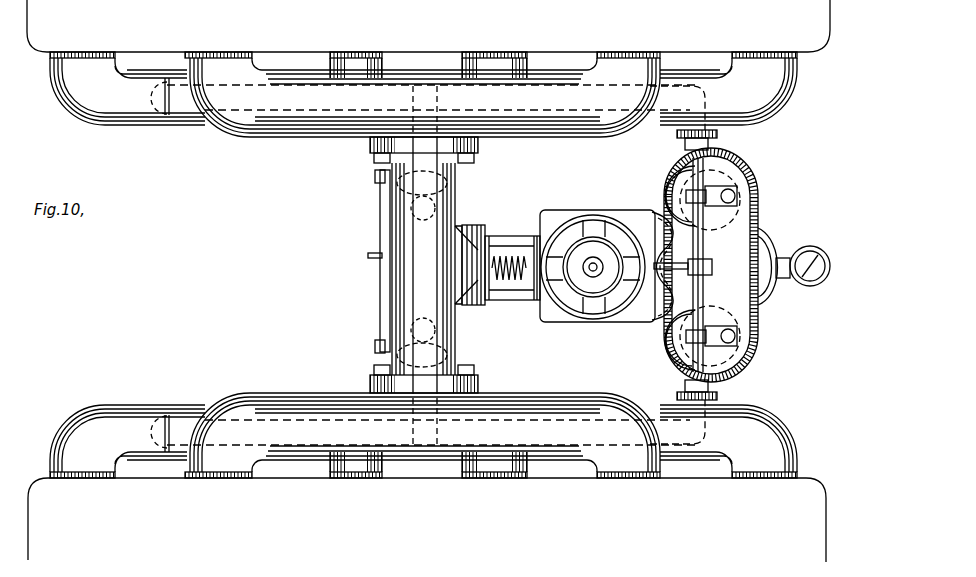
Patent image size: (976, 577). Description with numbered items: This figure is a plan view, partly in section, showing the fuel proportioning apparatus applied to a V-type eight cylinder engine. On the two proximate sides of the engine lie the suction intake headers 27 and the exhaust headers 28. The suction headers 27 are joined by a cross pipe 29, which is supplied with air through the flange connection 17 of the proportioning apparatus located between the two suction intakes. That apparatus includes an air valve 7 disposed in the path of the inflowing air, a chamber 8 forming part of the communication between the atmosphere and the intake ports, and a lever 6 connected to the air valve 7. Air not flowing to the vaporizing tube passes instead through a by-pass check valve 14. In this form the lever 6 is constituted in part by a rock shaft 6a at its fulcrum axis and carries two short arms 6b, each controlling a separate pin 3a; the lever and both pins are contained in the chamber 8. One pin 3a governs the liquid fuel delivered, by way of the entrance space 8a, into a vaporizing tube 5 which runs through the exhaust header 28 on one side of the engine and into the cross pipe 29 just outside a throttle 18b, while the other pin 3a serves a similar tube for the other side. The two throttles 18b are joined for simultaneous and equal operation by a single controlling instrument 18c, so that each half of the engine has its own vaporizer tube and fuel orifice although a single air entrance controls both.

The vaporizing tube 5 is at (135, 112).
The exhaust header 28 is at (196, 126).
The suction intake header 27 is at (280, 138).
The cross pipe 29 is at (397, 278).
The throttle 18b is at (398, 196).
The controlling instrument 18c is at (381, 268).
The flange connection 17 is at (483, 228).
The by-pass check valve 14 is at (525, 238).
The air valve 7 is at (616, 226).
The chamber 8 is at (664, 266).
The entrance space 8a is at (720, 222).
The rock shaft 6a is at (712, 258).
The lever 6 is at (676, 270).
The short arm 6b is at (722, 188).
The pin 3a is at (741, 200).